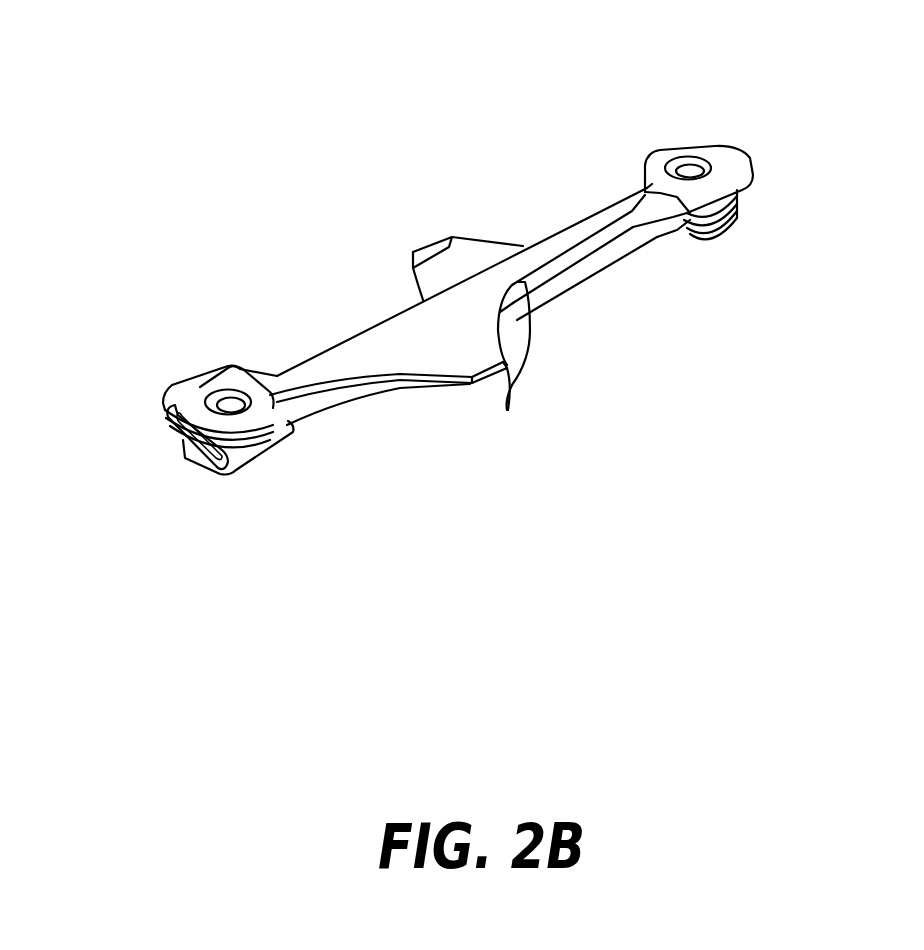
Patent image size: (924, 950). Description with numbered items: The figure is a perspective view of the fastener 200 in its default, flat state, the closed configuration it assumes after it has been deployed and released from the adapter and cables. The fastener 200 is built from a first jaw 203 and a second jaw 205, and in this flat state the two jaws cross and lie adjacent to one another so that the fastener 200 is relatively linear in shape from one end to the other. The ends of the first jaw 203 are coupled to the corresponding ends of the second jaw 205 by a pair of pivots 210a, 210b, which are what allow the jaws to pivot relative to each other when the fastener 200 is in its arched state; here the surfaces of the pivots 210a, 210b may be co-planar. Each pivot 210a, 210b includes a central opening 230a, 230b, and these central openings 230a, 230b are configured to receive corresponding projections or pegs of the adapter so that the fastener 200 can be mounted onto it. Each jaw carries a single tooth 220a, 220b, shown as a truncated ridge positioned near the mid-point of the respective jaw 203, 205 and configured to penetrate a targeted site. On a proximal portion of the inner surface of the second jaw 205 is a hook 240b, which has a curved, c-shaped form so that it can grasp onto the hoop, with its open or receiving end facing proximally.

The fastener 200 is at (589, 352).
The first jaw 203 is at (352, 347).
The second jaw 205 is at (600, 258).
The pivot 210a is at (188, 472).
The pivot 210b is at (740, 193).
The tooth 220a is at (443, 355).
The tooth 220b is at (460, 257).
The central opening 230a is at (222, 400).
The central opening 230b is at (690, 173).
The hook 240b is at (523, 340).